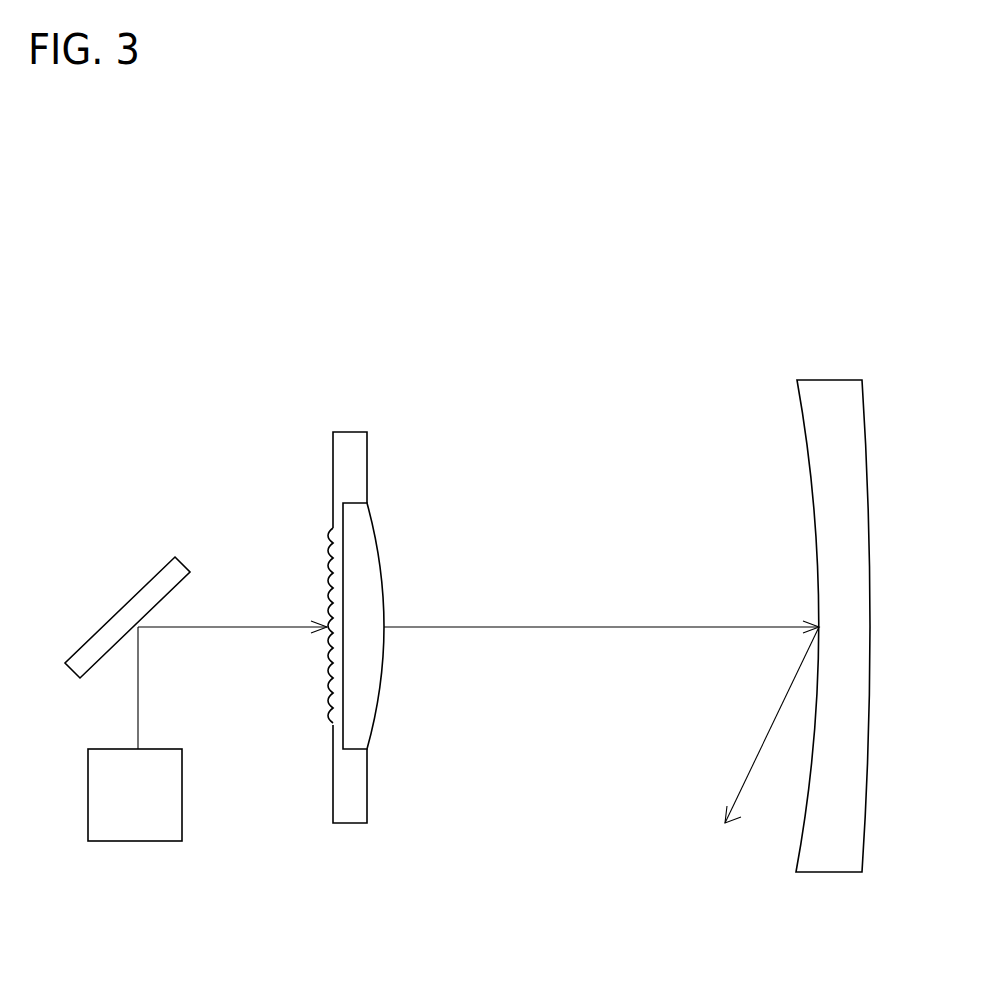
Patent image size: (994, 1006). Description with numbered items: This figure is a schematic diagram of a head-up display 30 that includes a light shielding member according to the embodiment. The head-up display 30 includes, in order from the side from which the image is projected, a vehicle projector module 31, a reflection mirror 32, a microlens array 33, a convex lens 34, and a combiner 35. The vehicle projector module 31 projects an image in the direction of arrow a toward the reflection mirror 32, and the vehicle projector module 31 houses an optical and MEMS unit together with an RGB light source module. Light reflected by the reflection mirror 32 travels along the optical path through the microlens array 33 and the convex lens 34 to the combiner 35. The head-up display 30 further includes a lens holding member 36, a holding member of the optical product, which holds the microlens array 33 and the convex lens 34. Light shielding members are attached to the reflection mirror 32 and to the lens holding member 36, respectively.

The head-up display 30 is at (917, 337).
The vehicle projector module 31 is at (137, 841).
The reflection mirror 32 is at (150, 578).
The microlens array 33 is at (323, 558).
The convex lens 34 is at (378, 692).
The combiner 35 is at (829, 872).
The lens holding member 36 is at (349, 432).
The arrow a is at (138, 692).